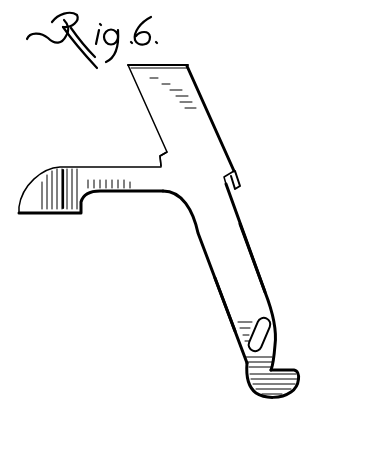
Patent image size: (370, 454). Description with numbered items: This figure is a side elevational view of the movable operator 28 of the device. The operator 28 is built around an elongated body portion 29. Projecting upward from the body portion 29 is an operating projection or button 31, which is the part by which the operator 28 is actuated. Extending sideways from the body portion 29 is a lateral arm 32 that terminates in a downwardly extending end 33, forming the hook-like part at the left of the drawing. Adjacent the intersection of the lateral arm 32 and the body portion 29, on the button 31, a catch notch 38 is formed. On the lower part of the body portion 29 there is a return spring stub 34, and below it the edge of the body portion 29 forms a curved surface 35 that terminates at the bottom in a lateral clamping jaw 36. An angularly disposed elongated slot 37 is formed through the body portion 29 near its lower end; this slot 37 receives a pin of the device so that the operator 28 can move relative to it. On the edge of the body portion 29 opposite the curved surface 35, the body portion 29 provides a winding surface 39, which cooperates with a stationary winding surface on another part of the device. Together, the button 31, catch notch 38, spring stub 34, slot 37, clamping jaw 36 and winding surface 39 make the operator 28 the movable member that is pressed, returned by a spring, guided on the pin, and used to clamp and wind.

The operator 28 is at (238, 132).
The elongated body portion 29 is at (226, 232).
The operating projection or button 31 is at (176, 66).
The lateral arm 32 is at (91, 143).
The downwardly extending end 33 is at (58, 211).
The return spring stub 34 is at (244, 182).
The curved surface 35 is at (266, 288).
The lateral clamping jaw 36 is at (278, 388).
The elongated slot 37 is at (251, 342).
The catch notch 38 is at (162, 152).
The winding surface 39 is at (222, 297).